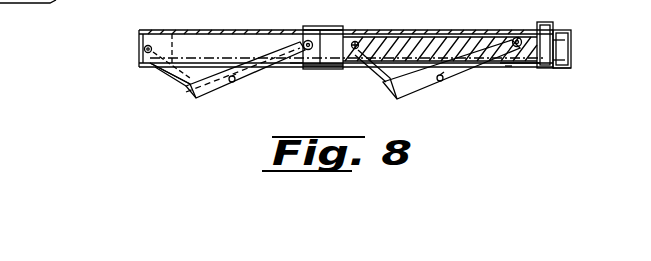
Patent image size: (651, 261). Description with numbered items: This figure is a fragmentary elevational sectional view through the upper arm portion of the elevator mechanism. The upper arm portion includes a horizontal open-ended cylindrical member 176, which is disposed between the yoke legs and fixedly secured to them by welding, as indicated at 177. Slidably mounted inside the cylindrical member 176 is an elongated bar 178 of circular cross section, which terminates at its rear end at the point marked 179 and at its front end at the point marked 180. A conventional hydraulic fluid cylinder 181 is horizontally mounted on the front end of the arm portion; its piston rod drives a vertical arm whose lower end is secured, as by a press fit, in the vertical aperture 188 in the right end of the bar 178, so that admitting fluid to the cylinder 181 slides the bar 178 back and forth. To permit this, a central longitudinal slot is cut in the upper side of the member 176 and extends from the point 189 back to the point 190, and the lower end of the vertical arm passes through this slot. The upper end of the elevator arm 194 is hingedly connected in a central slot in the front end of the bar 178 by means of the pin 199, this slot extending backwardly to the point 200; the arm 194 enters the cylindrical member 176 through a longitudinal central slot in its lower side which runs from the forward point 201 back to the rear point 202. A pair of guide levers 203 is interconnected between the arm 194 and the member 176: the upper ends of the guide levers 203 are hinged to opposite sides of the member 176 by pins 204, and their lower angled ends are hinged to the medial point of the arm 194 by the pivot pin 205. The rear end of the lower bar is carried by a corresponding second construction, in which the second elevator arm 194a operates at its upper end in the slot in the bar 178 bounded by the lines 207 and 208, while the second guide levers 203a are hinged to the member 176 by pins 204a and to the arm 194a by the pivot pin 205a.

The cylindrical member 176 is at (211, 30).
The welding 177 is at (334, 18).
The elongated bar 178 is at (452, 33).
The rear end point of bar 179 is at (570, 46).
The front end point of bar 180 is at (300, 37).
The hydraulic fluid cylinder 181 is at (548, 22).
The vertical aperture 188 is at (557, 68).
The slot front point 189 is at (392, 31).
The slot rear point 190 is at (553, 26).
The elevator arm 194 is at (250, 75).
The second elevator arm 194a is at (458, 70).
The pin 199 is at (298, 65).
The slot rear point of bar 200 is at (320, 65).
The forward slot point 201 is at (162, 68).
The rear slot point 202 is at (520, 64).
The guide lever 203 is at (186, 82).
The second guide lever 203a is at (380, 79).
The pin 204 is at (143, 48).
The pin 204a is at (358, 40).
The pivot pin 205 is at (232, 83).
The pivot pin 205a is at (441, 82).
The slot boundary line 207 is at (495, 36).
The slot boundary line 208 is at (509, 67).